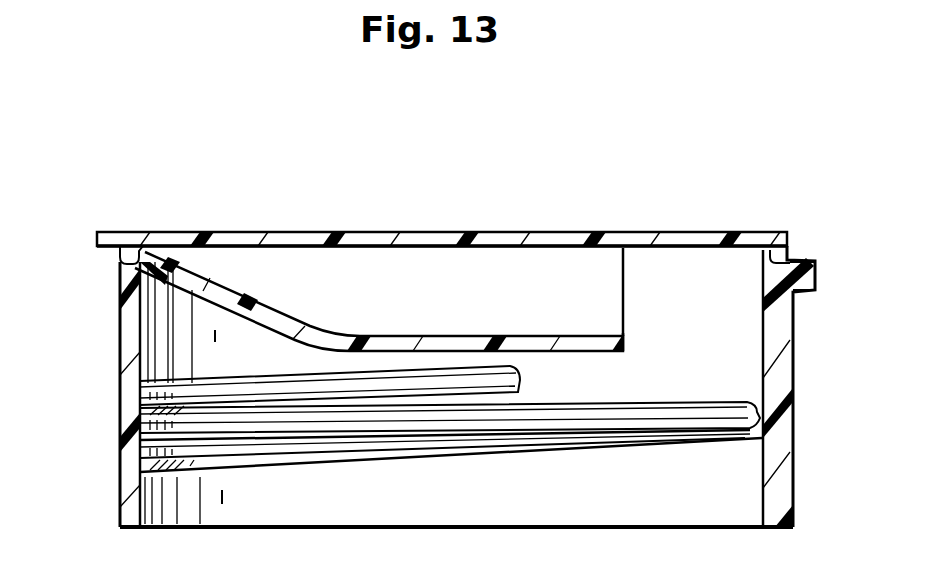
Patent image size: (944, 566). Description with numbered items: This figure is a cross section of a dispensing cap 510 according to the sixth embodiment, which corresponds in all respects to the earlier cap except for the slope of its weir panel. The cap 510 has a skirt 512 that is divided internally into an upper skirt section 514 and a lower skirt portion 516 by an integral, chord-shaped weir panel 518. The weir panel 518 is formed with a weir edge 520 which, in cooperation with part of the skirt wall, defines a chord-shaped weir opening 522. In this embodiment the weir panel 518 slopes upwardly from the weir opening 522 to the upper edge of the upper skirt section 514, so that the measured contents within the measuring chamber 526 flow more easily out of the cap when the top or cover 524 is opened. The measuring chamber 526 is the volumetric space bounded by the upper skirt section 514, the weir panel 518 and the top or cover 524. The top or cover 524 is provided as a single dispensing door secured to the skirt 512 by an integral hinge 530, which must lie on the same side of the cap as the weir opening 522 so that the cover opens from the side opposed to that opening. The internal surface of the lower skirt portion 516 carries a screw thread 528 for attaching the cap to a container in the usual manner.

The cap 510 is at (655, 205).
The skirt 512 is at (112, 398).
The upper skirt section 514 is at (118, 292).
The lower skirt portion 516 is at (120, 488).
The weir panel 518 is at (457, 332).
The weir edge 520 is at (626, 346).
The weir opening 522 is at (680, 338).
The top or cover 524 is at (462, 232).
The measuring chamber 526 is at (292, 272).
The screw thread 528 is at (453, 453).
The hinge 530 is at (812, 268).